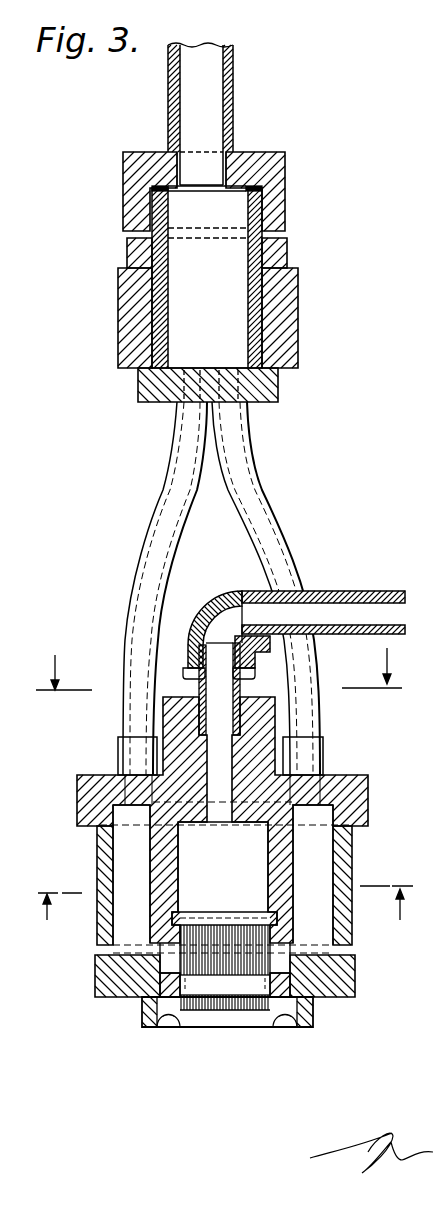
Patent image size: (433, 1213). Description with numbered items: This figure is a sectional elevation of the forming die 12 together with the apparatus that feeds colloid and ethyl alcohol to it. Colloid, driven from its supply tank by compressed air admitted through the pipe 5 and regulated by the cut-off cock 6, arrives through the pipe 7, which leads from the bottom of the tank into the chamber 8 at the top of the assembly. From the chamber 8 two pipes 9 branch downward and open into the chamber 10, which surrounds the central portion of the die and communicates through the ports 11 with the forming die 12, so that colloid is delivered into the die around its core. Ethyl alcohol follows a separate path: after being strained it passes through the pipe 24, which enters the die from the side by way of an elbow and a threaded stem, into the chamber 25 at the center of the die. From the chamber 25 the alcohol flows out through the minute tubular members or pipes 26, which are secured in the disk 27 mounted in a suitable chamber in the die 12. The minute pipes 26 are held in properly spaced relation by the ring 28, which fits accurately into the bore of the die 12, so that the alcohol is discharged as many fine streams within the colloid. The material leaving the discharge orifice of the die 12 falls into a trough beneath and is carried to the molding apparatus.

The pipe 7 is at (214, 103).
The chamber 8 is at (207, 278).
The pipes 9 is at (162, 556).
The pipe 24 is at (344, 601).
The chamber 10 is at (223, 875).
The chamber 25 is at (223, 867).
The disk 27 is at (190, 917).
The minute tubular members or pipes 26 is at (245, 922).
The ports 11 is at (168, 961).
The forming die 12 is at (150, 1008).
The ring 28 is at (207, 985).
The pipe 5 is at (219, 683).
The cut-off cock 6 is at (225, 893).